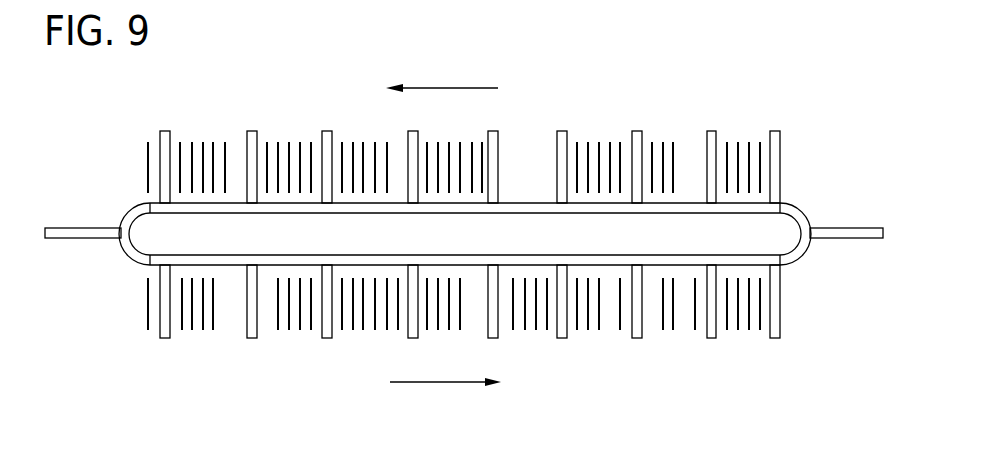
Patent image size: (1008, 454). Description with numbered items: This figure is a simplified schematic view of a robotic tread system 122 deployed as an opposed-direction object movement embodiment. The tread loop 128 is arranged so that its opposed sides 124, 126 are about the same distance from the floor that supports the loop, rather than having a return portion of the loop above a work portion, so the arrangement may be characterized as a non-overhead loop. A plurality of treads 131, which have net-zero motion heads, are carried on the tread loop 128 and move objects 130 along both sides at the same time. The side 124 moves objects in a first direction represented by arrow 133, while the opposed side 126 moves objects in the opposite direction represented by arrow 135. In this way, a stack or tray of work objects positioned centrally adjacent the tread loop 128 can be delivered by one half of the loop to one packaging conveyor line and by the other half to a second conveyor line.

The robotic tread system 122 is at (752, 83).
The opposed side 124 is at (524, 203).
The opposed side 126 is at (478, 267).
The tread loop 128 is at (504, 226).
The objects 130 is at (288, 141).
The treads 131 is at (158, 131).
The arrow 133 is at (470, 88).
The arrow 135 is at (442, 382).